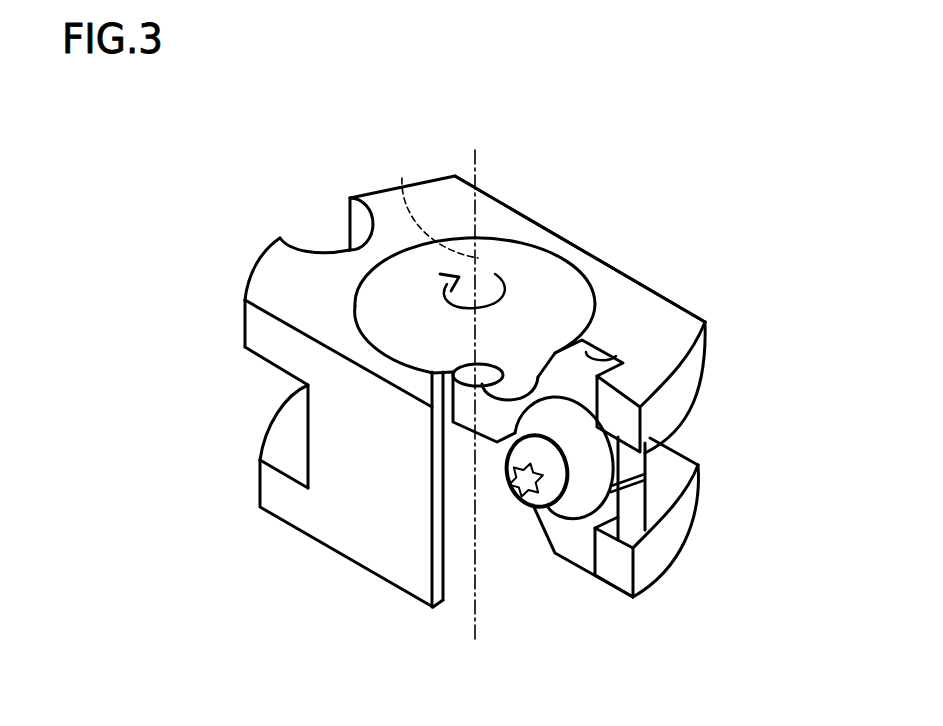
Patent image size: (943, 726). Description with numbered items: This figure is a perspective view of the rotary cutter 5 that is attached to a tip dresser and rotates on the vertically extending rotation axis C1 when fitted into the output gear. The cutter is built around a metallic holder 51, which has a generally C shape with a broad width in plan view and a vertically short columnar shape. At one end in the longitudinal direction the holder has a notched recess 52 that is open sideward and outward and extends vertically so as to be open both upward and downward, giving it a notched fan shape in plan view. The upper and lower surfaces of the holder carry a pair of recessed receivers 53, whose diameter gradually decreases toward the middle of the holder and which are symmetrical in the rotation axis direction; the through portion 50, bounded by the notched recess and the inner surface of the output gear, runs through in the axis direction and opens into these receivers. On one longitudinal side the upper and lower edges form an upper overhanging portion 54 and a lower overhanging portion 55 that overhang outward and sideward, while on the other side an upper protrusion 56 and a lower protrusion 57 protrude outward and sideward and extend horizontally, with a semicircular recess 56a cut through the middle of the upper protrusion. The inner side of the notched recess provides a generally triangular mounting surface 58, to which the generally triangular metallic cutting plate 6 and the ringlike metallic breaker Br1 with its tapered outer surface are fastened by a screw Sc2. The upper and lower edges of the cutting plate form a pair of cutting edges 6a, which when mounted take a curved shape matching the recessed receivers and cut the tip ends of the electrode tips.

The rotary cutter 5 is at (667, 197).
The cutting plate 6 is at (601, 352).
The cutting edges 6a is at (478, 385).
The through portion 50 is at (462, 495).
The holder 51 is at (250, 275).
The notched recess 52 is at (453, 403).
The recessed receivers 53 is at (387, 326).
The upper overhanging portion 54 is at (698, 355).
The lower overhanging portion 55 is at (667, 553).
The upper protrusion 56 is at (372, 192).
The semicircular recess 56a is at (310, 247).
The lower protrusion 57 is at (258, 485).
The mounting surface 58 is at (592, 346).
The rotation axis C1 is at (405, 171).
The screw Sc2 is at (535, 510).
The breaker Br1 is at (572, 525).